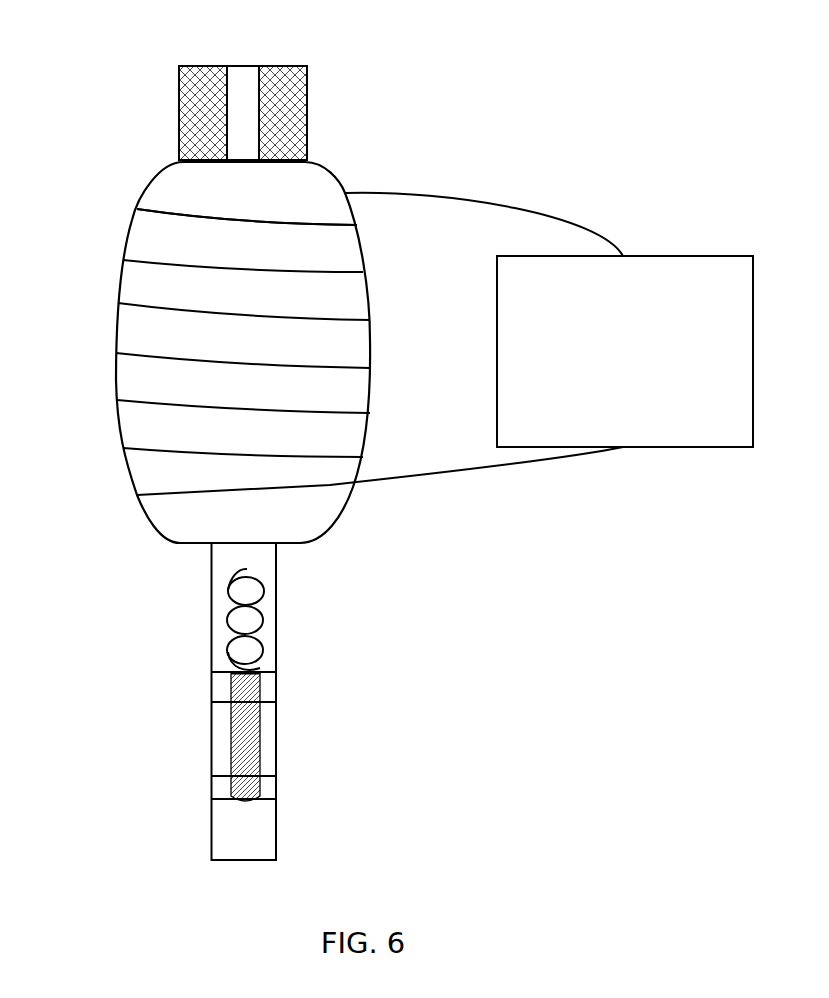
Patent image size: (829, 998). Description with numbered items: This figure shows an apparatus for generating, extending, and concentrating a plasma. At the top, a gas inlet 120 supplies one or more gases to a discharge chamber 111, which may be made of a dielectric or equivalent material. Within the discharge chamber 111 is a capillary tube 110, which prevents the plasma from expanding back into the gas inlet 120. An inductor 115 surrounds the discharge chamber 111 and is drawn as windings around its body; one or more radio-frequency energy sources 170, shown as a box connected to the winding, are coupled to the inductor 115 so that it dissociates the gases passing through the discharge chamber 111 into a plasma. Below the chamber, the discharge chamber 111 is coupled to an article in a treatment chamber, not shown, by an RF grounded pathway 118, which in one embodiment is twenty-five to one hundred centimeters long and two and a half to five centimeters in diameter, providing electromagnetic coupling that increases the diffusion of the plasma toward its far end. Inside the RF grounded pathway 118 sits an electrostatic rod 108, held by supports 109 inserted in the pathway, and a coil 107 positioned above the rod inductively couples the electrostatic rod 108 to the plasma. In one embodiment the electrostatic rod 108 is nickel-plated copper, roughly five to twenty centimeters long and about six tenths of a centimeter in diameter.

The coil 107 is at (257, 638).
The electrostatic rod 108 is at (247, 735).
The supports 109 is at (265, 689).
The capillary tube 110 is at (243, 66).
The discharge chamber 111 is at (250, 298).
The inductor 115 is at (258, 270).
The RF grounded pathway 118 is at (237, 557).
The gas inlet 120 is at (307, 115).
The radio-frequency energy sources 170 is at (445, 344).